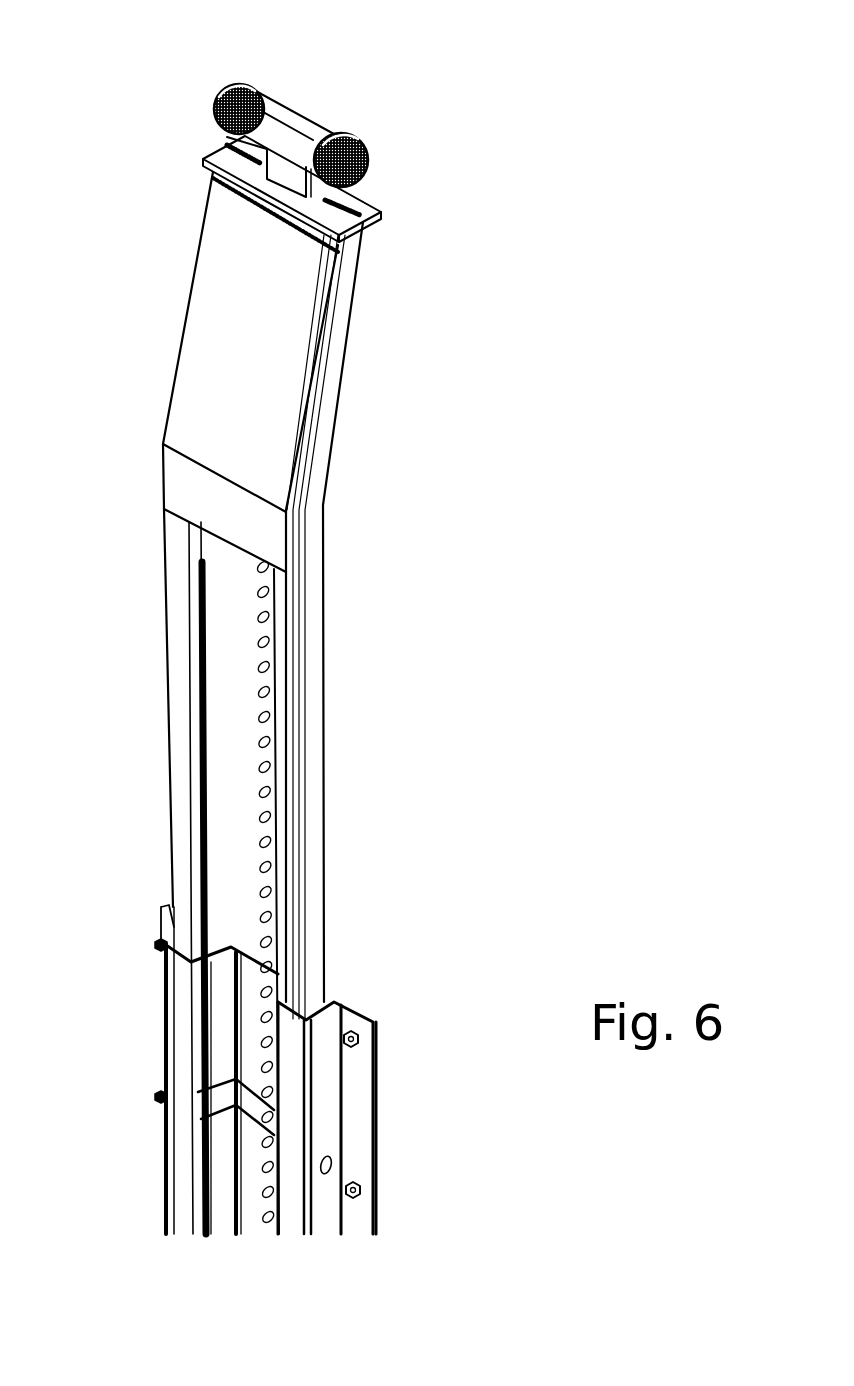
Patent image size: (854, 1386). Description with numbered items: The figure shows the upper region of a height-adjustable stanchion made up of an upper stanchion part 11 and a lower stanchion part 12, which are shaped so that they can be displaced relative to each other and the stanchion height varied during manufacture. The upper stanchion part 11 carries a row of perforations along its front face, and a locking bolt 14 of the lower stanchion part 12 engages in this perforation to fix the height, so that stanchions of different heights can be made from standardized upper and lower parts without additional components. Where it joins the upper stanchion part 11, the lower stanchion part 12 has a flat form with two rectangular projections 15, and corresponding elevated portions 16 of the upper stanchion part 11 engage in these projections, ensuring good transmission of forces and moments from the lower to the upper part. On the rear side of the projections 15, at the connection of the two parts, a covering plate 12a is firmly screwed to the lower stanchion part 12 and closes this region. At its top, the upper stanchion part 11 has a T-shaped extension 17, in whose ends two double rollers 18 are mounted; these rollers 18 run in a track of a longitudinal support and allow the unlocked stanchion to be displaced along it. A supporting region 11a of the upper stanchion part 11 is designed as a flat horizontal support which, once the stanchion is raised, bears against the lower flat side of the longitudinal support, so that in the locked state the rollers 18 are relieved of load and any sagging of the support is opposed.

The upper stanchion part 11 is at (310, 667).
The supporting region 11a is at (367, 206).
The lower stanchion part 12 is at (357, 1138).
The covering plate 12a is at (333, 1000).
The locking bolt 14 is at (207, 1110).
The rectangular projections 15 is at (182, 1040).
The elevated portions 16 is at (183, 760).
The T-shaped extension 17 is at (285, 138).
The double rollers 18 is at (230, 83).